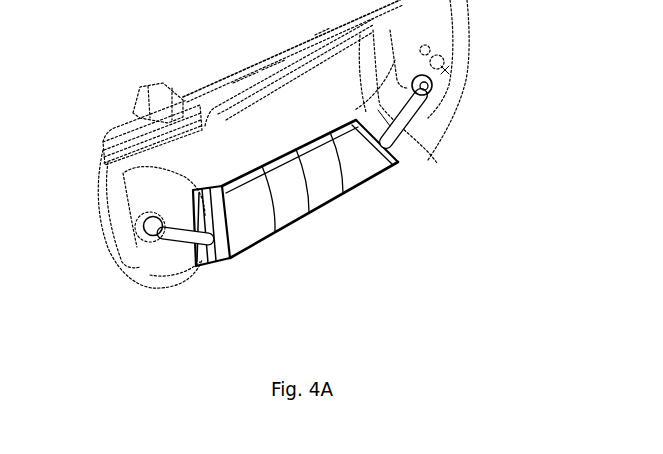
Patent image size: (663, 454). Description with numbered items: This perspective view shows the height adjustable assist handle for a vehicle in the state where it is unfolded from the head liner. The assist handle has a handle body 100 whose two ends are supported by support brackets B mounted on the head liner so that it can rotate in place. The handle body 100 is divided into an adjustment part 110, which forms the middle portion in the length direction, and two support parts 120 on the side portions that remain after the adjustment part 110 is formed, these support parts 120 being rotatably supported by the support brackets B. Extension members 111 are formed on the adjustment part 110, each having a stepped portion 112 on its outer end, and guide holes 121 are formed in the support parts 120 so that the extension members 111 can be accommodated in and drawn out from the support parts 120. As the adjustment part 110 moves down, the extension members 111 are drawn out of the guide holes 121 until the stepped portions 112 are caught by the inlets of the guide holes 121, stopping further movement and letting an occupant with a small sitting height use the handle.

The handle body 100 is at (417, 253).
The adjustment part 110 is at (317, 197).
The extension member 111 is at (430, 102).
The stepped portion 112 is at (432, 78).
The support part 120 is at (425, 120).
The guide hole 121 is at (383, 115).
The support bracket B is at (466, 10).